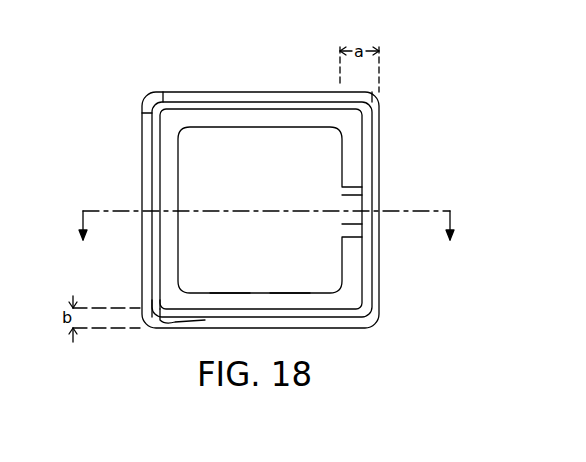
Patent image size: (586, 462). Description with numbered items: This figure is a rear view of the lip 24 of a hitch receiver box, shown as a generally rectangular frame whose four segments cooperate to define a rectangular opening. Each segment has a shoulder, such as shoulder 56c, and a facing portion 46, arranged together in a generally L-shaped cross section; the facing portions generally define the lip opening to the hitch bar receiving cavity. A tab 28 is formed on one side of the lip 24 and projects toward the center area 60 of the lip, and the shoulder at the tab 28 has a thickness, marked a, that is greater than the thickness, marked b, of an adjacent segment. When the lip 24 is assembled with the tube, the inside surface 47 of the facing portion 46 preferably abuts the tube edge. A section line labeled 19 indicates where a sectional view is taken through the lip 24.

The lip 24 is at (118, 135).
The tab 28 is at (358, 207).
The center area 60 is at (256, 176).
The facing portion 46 is at (233, 294).
The inside surface 47 is at (278, 303).
The shoulder 56c is at (193, 315).
The section line 19- 19 is at (268, 233).